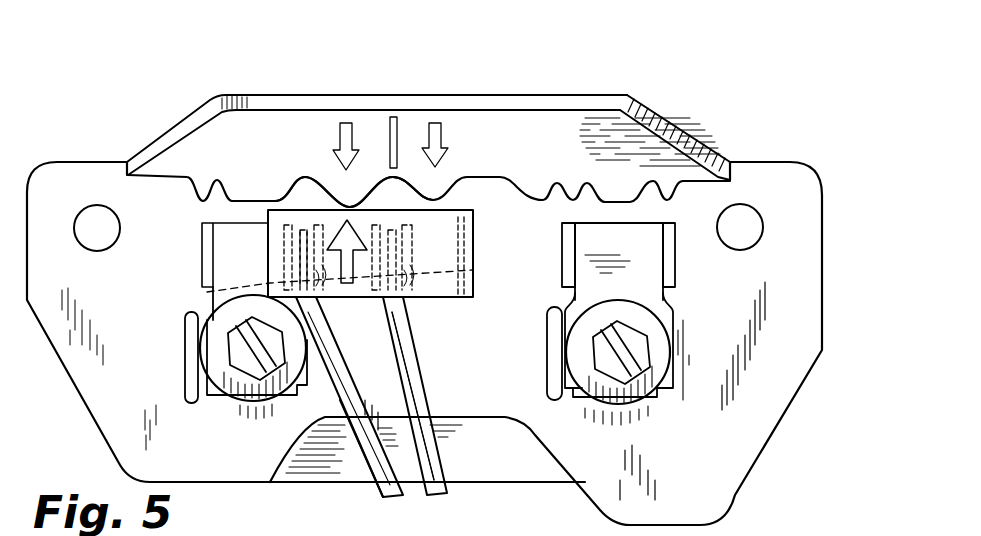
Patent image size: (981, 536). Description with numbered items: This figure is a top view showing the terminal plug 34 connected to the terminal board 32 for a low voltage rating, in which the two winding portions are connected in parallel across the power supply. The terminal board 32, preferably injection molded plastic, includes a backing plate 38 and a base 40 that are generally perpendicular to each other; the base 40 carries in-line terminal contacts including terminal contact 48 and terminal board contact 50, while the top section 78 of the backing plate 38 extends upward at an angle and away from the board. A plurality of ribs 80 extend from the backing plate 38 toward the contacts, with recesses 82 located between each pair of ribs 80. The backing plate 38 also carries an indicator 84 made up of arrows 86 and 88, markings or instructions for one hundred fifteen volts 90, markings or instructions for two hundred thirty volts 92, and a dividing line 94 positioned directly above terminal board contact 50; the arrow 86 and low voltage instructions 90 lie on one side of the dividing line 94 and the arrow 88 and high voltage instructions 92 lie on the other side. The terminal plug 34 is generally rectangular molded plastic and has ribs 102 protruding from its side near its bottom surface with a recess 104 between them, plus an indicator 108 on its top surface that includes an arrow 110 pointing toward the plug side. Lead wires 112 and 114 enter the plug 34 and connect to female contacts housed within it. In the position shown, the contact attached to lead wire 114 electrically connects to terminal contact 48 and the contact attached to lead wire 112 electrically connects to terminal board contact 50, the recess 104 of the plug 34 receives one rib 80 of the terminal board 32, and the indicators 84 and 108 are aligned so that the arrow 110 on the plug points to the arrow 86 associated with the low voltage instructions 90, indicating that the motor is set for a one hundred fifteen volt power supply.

The terminal board 32 is at (753, 388).
The terminal plug 34 is at (452, 298).
The backing plate 38 is at (647, 137).
The base 40 is at (97, 393).
The terminal contact 48 is at (207, 292).
The terminal board contact 50 is at (473, 270).
The top section 78 is at (175, 130).
The ribs 80 is at (270, 192).
The recesses 82 is at (218, 190).
The indicator 84 is at (290, 95).
The arrow 86 is at (338, 125).
The arrow 88 is at (432, 125).
The markings or instructions for 115 volts 90 is at (250, 122).
The markings or instructions for 230 volts 92 is at (547, 137).
The dividing line 94 is at (392, 117).
The ribs 102 is at (298, 189).
The recess 104 is at (323, 200).
The indicator 108 is at (358, 342).
The arrow 110 is at (348, 297).
The lead wire 112 is at (413, 403).
The lead wire 114 is at (340, 393).